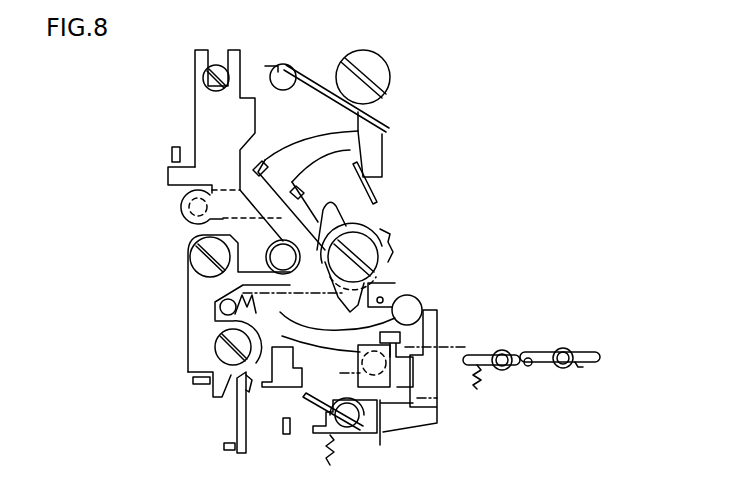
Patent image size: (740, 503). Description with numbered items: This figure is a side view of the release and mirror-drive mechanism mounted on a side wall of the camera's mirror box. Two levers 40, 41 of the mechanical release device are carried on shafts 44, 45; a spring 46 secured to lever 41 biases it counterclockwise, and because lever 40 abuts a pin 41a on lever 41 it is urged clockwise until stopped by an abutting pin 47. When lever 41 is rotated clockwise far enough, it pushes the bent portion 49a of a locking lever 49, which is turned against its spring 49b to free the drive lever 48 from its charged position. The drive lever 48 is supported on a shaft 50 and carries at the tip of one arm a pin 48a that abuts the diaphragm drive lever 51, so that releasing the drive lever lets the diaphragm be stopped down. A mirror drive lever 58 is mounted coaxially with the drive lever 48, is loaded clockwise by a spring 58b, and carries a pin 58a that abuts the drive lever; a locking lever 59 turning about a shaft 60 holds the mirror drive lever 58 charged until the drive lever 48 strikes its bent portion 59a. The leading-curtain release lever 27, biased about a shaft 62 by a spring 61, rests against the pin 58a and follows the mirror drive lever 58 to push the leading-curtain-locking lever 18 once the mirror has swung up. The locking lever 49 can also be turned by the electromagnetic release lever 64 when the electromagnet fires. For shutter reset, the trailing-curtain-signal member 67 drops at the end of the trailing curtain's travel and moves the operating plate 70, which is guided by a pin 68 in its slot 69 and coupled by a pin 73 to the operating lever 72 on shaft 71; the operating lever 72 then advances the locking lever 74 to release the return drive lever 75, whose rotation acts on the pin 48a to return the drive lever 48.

The leading-curtain-locking lever 18 is at (286, 435).
The leading-curtain release lever 27 is at (428, 418).
The lever 40 is at (590, 352).
The lever 41 is at (516, 367).
The pin 41a is at (530, 367).
The shaft 44 is at (562, 368).
The shaft 45 is at (508, 354).
The spring 46 is at (476, 375).
The abutting pin 47 is at (580, 367).
The drive lever 48 is at (340, 210).
The pin 48a is at (365, 400).
The locking lever 49 is at (218, 323).
The bent portion 49a is at (421, 312).
The spring 49b is at (246, 398).
The shaft 50 is at (368, 258).
The diaphragm drive lever 51 is at (393, 388).
The mirror drive lever 58 is at (310, 203).
The pin 58a is at (398, 292).
The spring 58b is at (217, 297).
The locking lever 59 is at (372, 143).
The bent portion 59a is at (375, 188).
The shaft 60 is at (370, 64).
The spring 61 is at (327, 452).
The shaft 62 is at (357, 425).
The electromagnetic release lever 64 is at (224, 447).
The trailing-curtain-signal member 67 is at (172, 150).
The pin 68 is at (203, 75).
The slot 69 is at (218, 52).
The operating plate 70 is at (168, 173).
The shaft 71 is at (198, 257).
The operating lever 72 is at (202, 288).
The pin 73 is at (288, 264).
The locking lever 74 is at (193, 381).
The return drive lever 75 is at (285, 348).